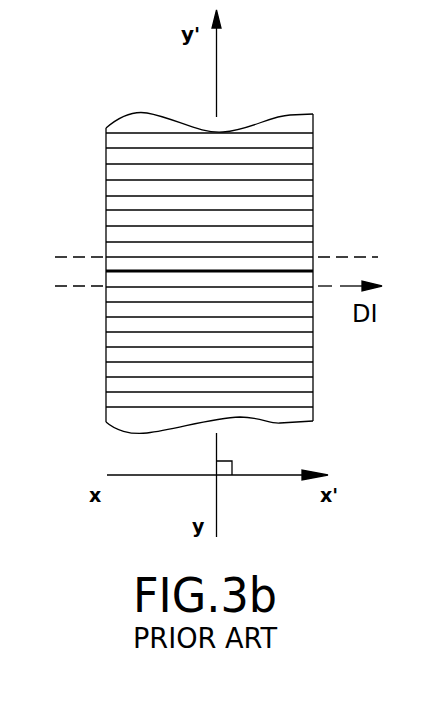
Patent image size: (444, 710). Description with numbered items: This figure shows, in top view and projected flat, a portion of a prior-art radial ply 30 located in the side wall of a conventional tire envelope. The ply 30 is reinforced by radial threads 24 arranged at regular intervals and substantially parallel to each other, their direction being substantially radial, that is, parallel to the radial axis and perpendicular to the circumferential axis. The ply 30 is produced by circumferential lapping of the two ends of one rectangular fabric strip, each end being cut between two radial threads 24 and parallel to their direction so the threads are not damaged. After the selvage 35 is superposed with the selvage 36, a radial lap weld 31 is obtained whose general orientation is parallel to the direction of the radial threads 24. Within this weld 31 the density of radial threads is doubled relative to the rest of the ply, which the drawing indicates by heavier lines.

The radial ply 30 is at (268, 88).
The radial threads 24 is at (118, 162).
The selvage 36 is at (122, 257).
The lap weld 31 is at (302, 262).
The selvage 35 is at (125, 287).